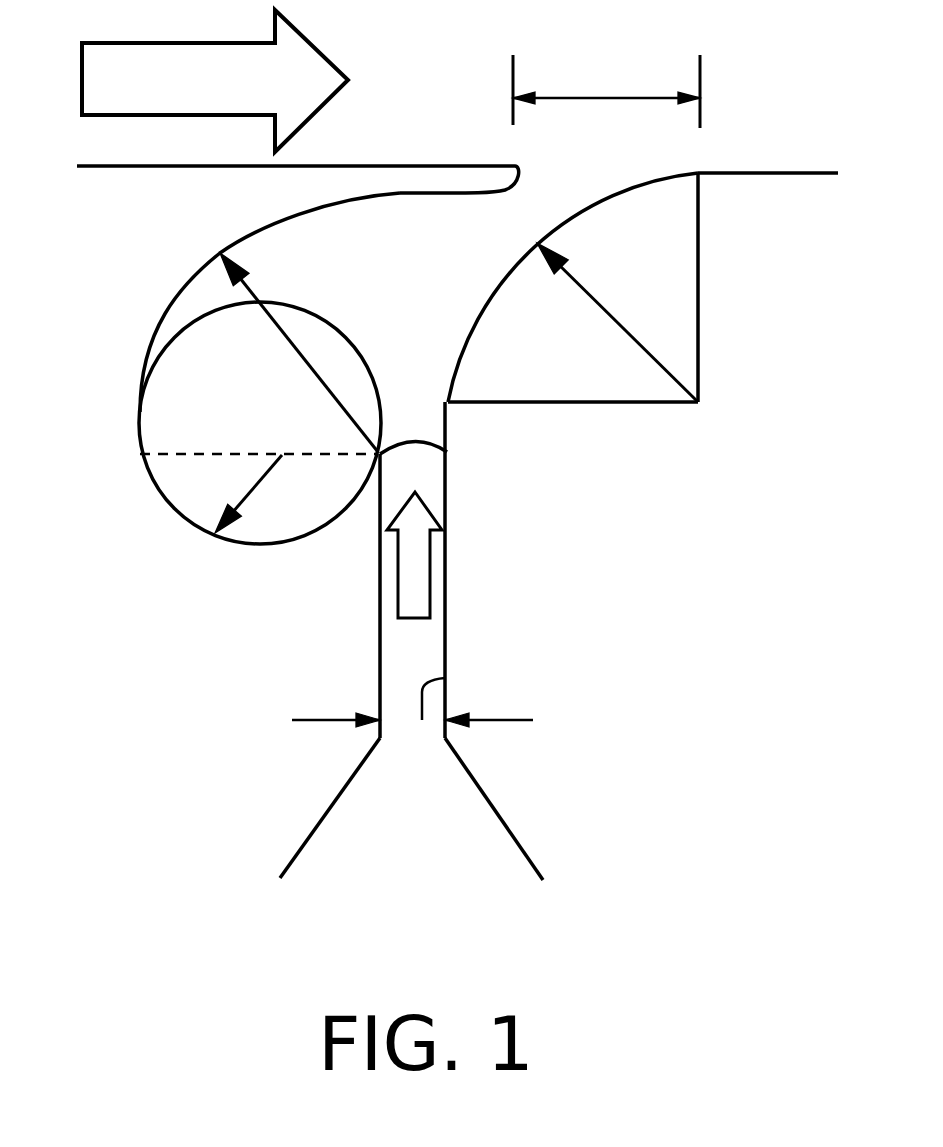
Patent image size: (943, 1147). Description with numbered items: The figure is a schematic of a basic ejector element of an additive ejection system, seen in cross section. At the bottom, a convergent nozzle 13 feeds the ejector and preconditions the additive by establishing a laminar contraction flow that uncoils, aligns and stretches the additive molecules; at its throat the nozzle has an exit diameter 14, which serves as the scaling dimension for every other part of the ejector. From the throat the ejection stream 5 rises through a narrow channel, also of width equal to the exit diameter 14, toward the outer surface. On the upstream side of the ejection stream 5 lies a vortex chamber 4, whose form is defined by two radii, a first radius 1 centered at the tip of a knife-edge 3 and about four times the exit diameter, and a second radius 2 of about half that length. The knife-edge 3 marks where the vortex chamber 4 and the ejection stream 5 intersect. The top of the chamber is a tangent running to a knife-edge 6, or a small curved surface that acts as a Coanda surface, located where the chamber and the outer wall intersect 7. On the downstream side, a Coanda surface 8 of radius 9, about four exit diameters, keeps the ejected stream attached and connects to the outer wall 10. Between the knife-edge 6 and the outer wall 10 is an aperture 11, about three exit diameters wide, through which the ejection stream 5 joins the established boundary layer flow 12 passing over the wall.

The first radius 1 is at (268, 318).
The second radius 2 is at (247, 490).
The knife-edge 3 is at (447, 452).
The vortex chamber 4 is at (143, 370).
The ejection stream 5 is at (417, 560).
The knife-edge or curved surface 6 is at (515, 167).
The outer wall intersection 7 is at (296, 140).
The Coanda surface 8 is at (637, 187).
The Coanda surface radius 9 is at (600, 312).
The outer wall 10 is at (772, 152).
The aperture 11 is at (606, 88).
The established boundary layer flow 12 is at (215, 81).
The nozzle 13 is at (428, 800).
The exit diameter 14 is at (445, 678).